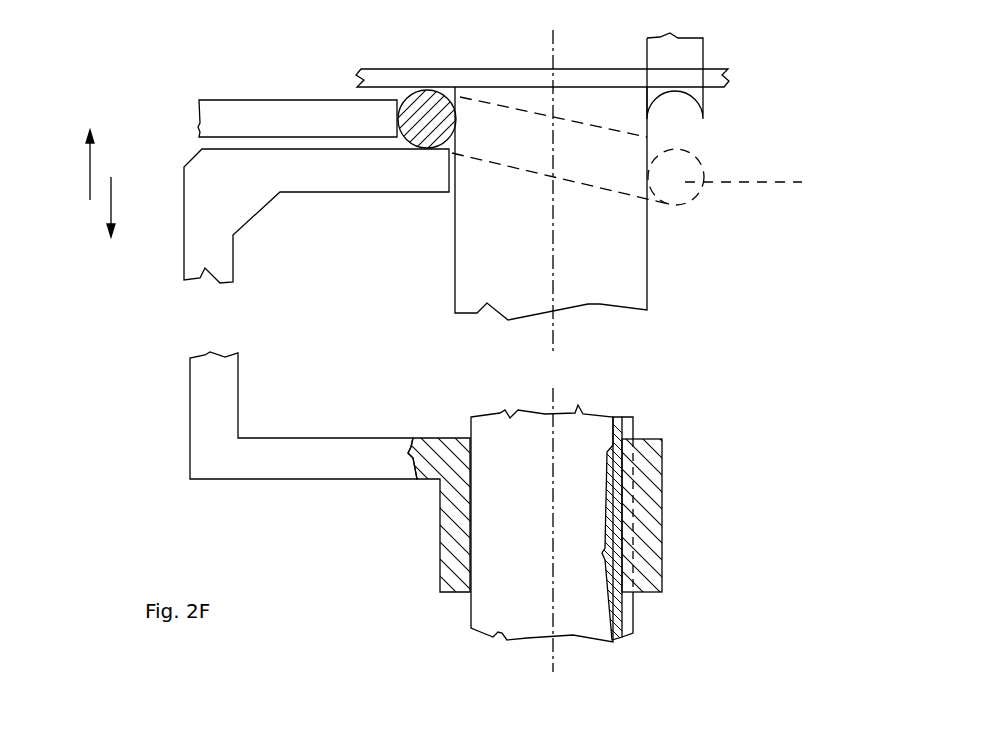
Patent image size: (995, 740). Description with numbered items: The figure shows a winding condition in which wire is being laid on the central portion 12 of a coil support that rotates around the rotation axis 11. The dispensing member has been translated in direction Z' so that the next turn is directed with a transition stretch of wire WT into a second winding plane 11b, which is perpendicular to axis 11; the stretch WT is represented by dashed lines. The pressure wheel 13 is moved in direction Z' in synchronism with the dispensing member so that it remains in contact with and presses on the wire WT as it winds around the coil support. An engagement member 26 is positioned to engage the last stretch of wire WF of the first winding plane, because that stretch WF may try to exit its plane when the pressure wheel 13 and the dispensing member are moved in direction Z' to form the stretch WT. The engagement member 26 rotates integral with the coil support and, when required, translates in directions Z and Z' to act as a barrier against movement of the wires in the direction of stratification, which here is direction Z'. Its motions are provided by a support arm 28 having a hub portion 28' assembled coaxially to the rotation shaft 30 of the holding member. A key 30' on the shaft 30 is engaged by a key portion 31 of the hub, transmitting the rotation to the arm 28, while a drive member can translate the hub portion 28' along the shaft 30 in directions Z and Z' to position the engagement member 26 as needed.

The rotation axis 11 is at (553, 38).
The second winding plane 11b is at (755, 182).
The central portion 12 is at (623, 263).
The pressure wheel 13 is at (242, 105).
The engagement member 26 is at (313, 185).
The support arm 28 is at (267, 415).
The hub portion 28' is at (417, 505).
The rotation shaft 30 is at (525, 549).
The key 30' is at (655, 504).
The key portion 31 is at (625, 475).
The last stretch of wire of the first winding plane WF is at (422, 100).
The transition stretch of wire WT is at (523, 160).
The direction Z is at (71, 165).
The direction Z' is at (135, 207).